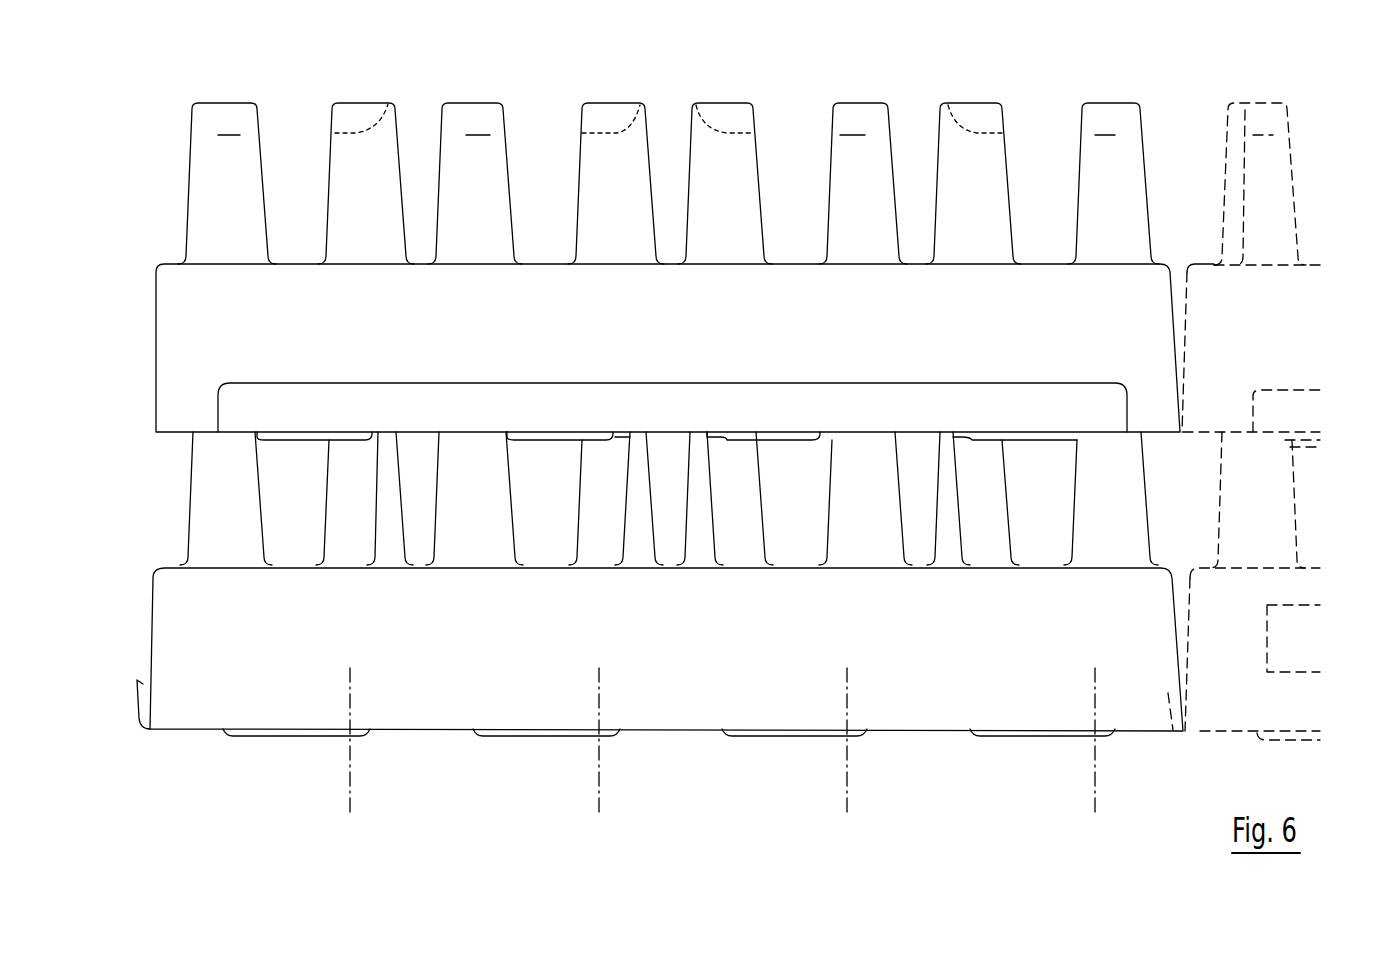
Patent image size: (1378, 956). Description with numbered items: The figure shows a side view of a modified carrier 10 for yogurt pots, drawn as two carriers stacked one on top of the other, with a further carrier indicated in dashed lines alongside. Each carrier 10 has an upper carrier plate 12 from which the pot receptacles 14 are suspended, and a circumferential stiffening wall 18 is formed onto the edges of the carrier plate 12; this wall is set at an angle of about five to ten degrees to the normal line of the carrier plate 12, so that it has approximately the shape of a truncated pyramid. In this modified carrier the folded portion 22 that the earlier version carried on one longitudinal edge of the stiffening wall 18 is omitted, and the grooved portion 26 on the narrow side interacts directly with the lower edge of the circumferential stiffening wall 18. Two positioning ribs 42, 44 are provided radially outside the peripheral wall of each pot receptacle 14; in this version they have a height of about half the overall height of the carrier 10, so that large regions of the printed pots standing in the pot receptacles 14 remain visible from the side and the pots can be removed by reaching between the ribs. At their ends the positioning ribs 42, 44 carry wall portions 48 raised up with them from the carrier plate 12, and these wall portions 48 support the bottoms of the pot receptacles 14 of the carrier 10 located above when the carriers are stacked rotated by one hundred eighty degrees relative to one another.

The carrier 10 is at (960, 297).
The carrier plate 12 is at (787, 264).
The pot receptacles 14 is at (560, 443).
The circumferential stiffening wall 18 is at (430, 310).
The folded portion 22 is at (348, 402).
The grooved portion 26 is at (158, 683).
The positioning rib 42 is at (573, 190).
The positioning rib 44 is at (693, 143).
The wall portions 48 is at (978, 133).